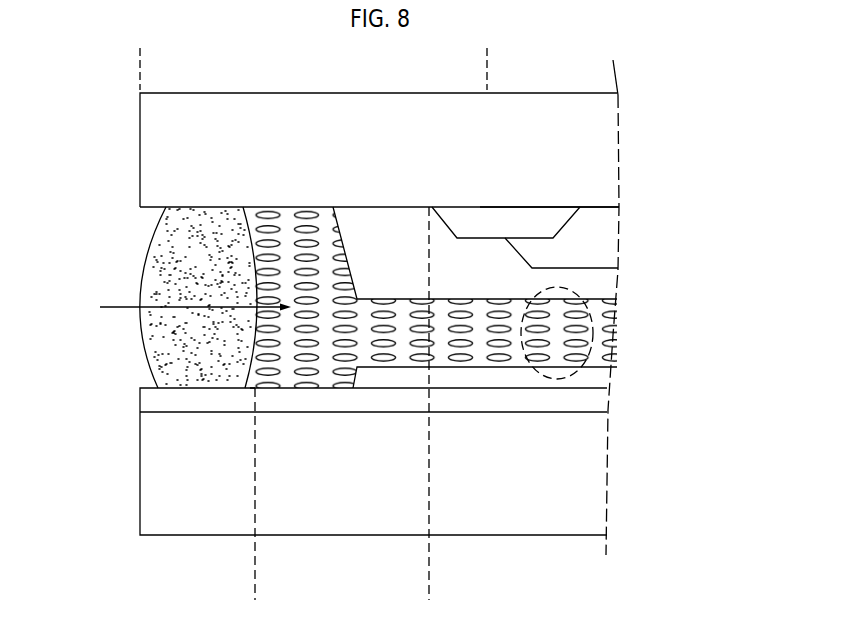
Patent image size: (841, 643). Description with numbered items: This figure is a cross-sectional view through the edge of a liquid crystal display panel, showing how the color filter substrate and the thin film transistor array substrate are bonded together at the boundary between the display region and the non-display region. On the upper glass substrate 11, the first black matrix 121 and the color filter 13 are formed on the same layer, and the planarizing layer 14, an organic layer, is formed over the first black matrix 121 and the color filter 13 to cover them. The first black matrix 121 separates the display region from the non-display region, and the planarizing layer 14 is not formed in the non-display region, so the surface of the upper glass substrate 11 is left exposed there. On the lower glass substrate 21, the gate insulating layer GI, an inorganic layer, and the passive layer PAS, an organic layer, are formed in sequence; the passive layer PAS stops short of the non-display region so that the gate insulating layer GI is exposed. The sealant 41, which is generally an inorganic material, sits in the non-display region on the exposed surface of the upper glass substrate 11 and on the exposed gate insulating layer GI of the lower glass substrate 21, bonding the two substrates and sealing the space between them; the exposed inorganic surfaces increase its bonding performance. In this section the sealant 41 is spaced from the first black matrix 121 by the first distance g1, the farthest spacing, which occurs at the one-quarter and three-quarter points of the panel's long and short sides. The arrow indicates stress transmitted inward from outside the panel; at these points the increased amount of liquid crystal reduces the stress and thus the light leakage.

The upper glass substrate 11 is at (148, 150).
The first black matrix 121 is at (543, 207).
The color filter 13 is at (608, 223).
The planarizing layer 14 is at (608, 281).
The sealant 41 is at (150, 282).
The liquid crystal region A is at (600, 330).
The passive layer PAS is at (600, 377).
The gate insulating layer GI is at (147, 401).
The lower glass substrate 21 is at (147, 476).
The first distance g1 is at (420, 580).